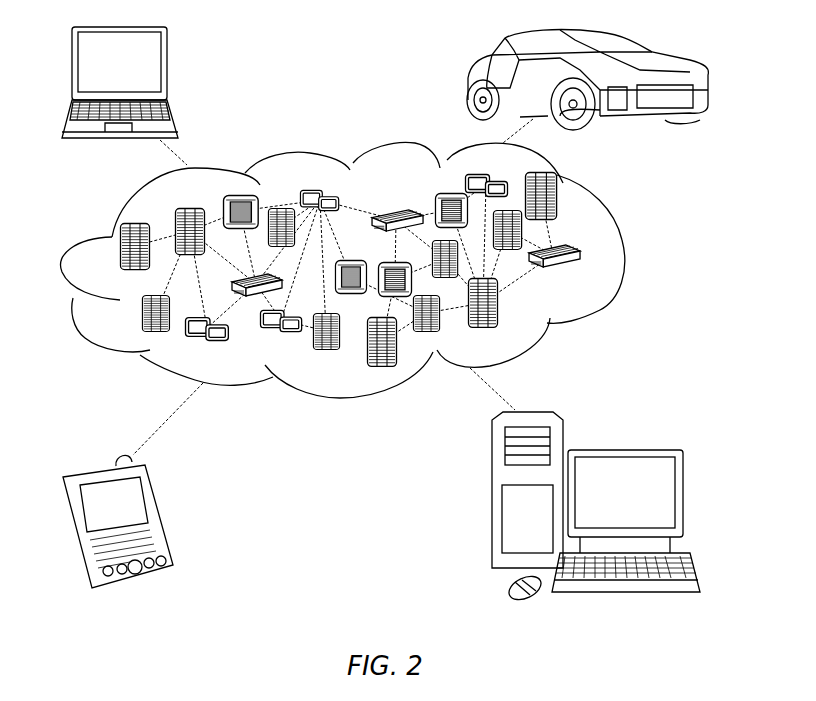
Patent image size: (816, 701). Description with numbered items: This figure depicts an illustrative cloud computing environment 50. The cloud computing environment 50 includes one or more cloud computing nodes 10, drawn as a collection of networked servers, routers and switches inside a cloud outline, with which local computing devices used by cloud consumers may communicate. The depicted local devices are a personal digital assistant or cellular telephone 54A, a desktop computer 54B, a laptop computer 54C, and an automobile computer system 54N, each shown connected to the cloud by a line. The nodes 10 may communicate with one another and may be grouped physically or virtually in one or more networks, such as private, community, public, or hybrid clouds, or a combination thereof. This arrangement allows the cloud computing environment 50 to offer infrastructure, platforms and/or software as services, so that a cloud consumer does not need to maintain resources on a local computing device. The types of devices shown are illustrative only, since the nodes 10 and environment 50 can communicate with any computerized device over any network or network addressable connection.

The cloud computing nodes 10 is at (590, 277).
The cloud computing environment 50 is at (625, 257).
The personal digital assistant (PDA) or cellular telephone 54A is at (158, 513).
The desktop computer 54B is at (622, 450).
The laptop computer 54C is at (168, 68).
The automobile computer system 54N is at (475, 83).